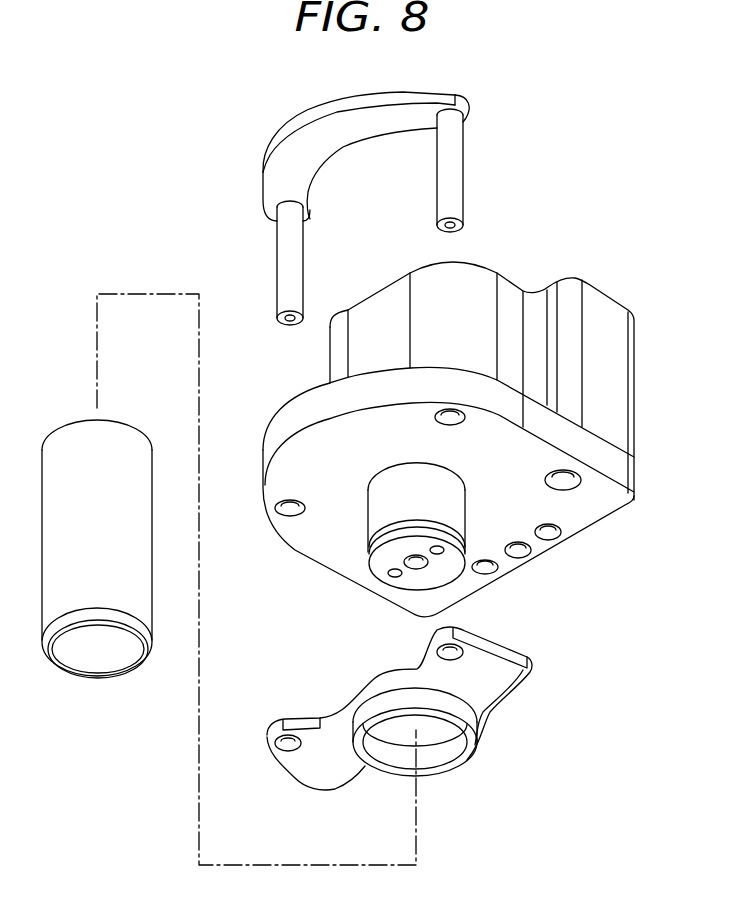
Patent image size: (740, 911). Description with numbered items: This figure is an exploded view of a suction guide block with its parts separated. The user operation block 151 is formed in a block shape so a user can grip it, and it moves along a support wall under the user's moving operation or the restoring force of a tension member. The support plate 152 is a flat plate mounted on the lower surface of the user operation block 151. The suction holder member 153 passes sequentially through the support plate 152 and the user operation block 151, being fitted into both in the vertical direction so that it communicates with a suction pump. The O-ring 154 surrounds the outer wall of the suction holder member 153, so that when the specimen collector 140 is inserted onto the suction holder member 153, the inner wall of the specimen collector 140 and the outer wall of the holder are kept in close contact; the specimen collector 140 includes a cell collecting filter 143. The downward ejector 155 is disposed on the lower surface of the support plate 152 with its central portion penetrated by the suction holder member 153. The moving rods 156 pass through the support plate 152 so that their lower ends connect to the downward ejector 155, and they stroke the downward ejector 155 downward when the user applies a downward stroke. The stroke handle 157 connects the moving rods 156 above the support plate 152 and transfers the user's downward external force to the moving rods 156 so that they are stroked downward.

The specimen collector 140 is at (83, 438).
The cell collecting filter 143 is at (100, 660).
The user operation block 151 is at (620, 377).
The support plate 152 is at (618, 472).
The suction holder member 153 is at (387, 500).
The O-ring 154 is at (460, 535).
The downward ejector 155 is at (495, 681).
The moving rod 156 is at (292, 248).
The stroke handle 157 is at (285, 173).